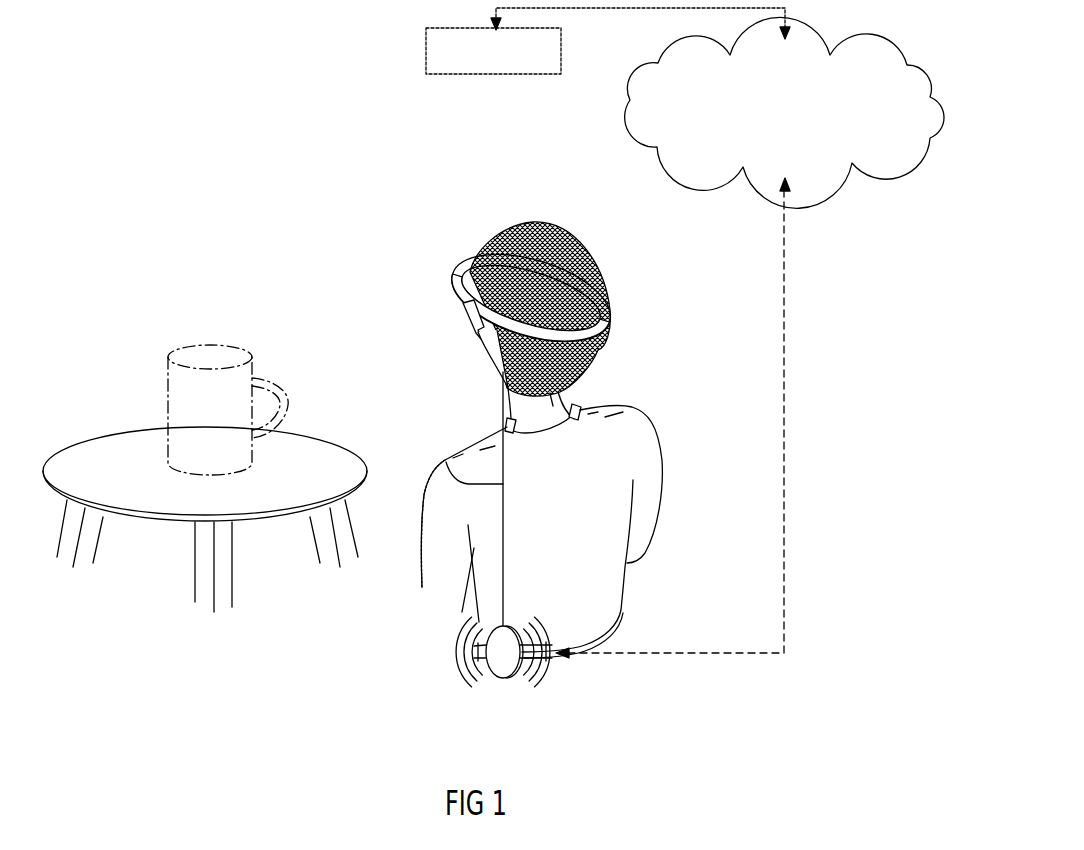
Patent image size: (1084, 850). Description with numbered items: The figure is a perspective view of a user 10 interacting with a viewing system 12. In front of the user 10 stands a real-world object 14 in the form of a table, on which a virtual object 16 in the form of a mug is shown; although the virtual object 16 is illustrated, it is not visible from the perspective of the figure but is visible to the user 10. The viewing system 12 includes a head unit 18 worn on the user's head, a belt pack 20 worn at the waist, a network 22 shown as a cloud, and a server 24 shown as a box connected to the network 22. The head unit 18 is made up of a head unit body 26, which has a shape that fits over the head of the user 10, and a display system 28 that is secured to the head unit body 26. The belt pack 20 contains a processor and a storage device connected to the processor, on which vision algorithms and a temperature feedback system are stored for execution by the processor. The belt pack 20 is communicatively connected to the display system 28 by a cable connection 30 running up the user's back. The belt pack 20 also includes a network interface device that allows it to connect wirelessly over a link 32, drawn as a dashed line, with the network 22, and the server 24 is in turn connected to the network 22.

The user 10 is at (645, 430).
The viewing system 12 is at (177, 127).
The real-world object 14 is at (122, 438).
The virtual object 16 is at (254, 363).
The head unit 18 is at (536, 402).
The belt pack 20 is at (507, 680).
The network 22 is at (784, 112).
The server 24 is at (493, 51).
The head unit body 26 is at (613, 319).
The display system 28 is at (452, 295).
The cable connection 30 is at (447, 478).
The link 32 is at (778, 246).